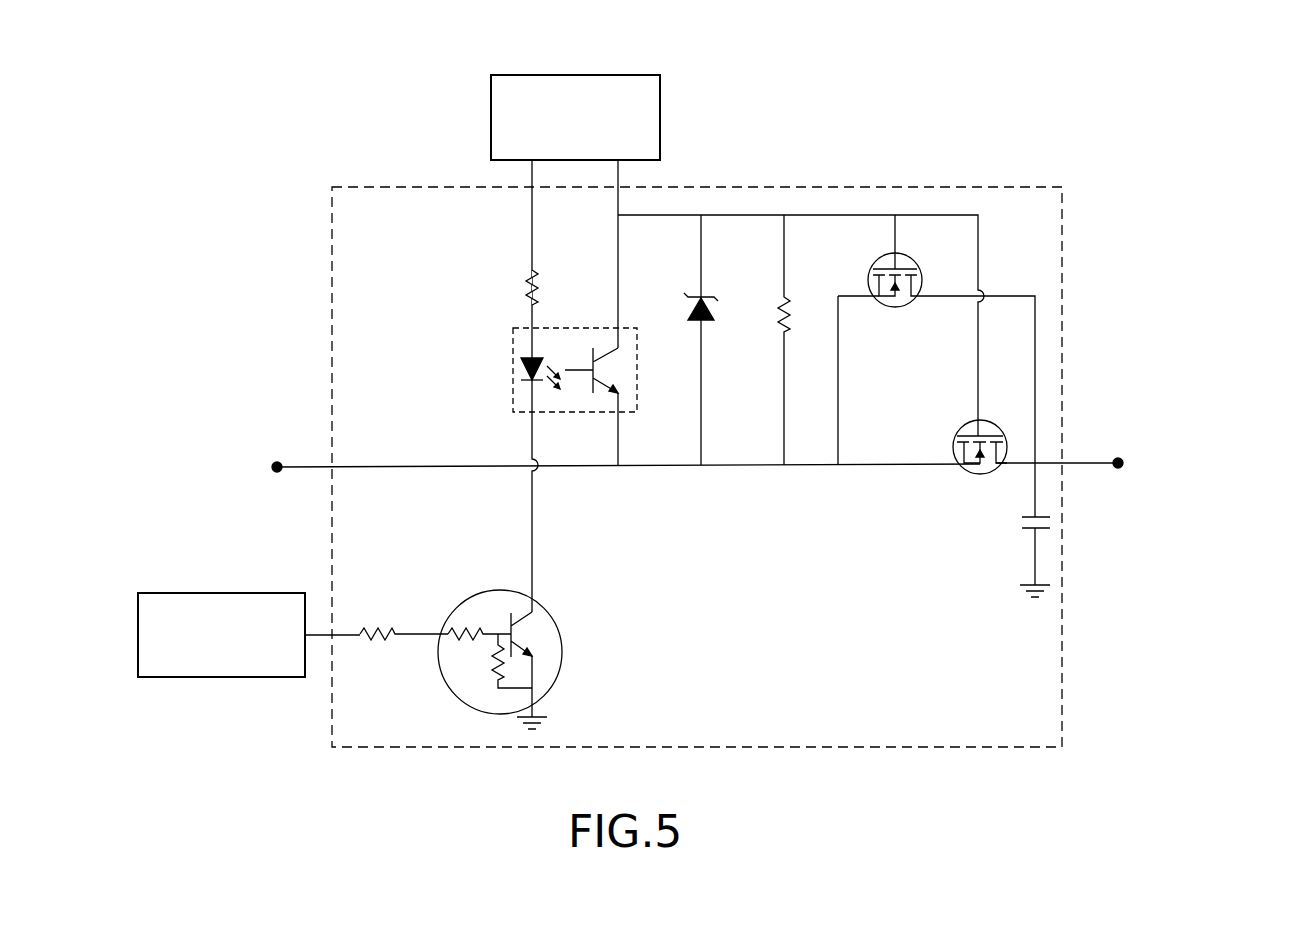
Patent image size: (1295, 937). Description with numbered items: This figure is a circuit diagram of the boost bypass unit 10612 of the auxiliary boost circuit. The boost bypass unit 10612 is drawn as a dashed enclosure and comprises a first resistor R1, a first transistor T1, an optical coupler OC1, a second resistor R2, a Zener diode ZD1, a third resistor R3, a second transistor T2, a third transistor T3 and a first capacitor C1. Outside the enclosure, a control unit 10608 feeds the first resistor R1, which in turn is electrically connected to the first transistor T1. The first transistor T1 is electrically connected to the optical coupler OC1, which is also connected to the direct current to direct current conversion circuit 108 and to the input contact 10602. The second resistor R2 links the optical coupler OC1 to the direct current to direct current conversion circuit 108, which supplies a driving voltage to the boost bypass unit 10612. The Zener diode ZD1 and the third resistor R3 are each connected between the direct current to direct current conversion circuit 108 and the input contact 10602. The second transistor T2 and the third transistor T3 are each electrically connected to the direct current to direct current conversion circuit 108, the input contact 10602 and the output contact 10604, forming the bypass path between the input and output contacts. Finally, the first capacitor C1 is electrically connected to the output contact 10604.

The direct current to direct current conversion circuit 108 is at (575, 78).
The input contact 10602 is at (277, 466).
The output contact 10604 is at (1118, 462).
The control unit 10608 is at (222, 600).
The boost bypass unit 10612 is at (920, 190).
The first resistor R1 is at (404, 620).
The second resistor R2 is at (514, 287).
The third resistor R3 is at (766, 340).
The Zener diode ZD1 is at (678, 340).
The optical coupler OC1 is at (547, 370).
The first transistor T1 is at (500, 646).
The second transistor T2 is at (936, 366).
The third transistor T3 is at (973, 435).
The first capacitor C1 is at (1020, 555).